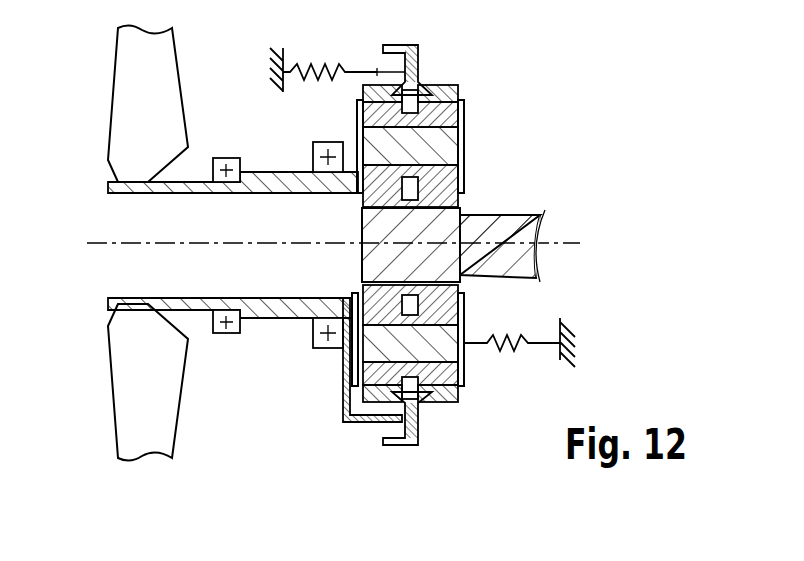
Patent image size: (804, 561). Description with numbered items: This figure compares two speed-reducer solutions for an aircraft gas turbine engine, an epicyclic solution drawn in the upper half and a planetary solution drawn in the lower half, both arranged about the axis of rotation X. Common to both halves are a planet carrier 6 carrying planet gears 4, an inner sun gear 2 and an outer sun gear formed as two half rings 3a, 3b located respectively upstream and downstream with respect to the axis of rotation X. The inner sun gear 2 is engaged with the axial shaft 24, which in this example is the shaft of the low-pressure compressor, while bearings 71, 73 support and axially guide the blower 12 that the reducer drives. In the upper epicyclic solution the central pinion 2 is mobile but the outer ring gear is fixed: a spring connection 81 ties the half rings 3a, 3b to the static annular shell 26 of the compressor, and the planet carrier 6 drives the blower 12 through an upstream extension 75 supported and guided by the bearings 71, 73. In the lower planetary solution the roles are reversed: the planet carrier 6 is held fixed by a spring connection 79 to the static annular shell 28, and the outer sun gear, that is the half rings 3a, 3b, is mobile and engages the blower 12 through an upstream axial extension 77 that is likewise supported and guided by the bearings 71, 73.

The central pinion 2 is at (360, 198).
The upstream half ring 3a is at (382, 95).
The downstream half ring 3b is at (440, 92).
The planet gears 4 is at (455, 115).
The planet carrier 6 is at (440, 150).
The blower 12 is at (132, 130).
The axial shaft 24 is at (525, 232).
The static annular shell 26 is at (268, 72).
The static annular shell 28 is at (580, 352).
The bearing 71 is at (232, 186).
The bearing 73 is at (313, 158).
The upper flange 75 is at (108, 187).
The upstream axial extension 77 is at (283, 320).
The spring connection 79 is at (533, 332).
The spring connection 81 is at (343, 64).
The axis of rotation X is at (87, 245).